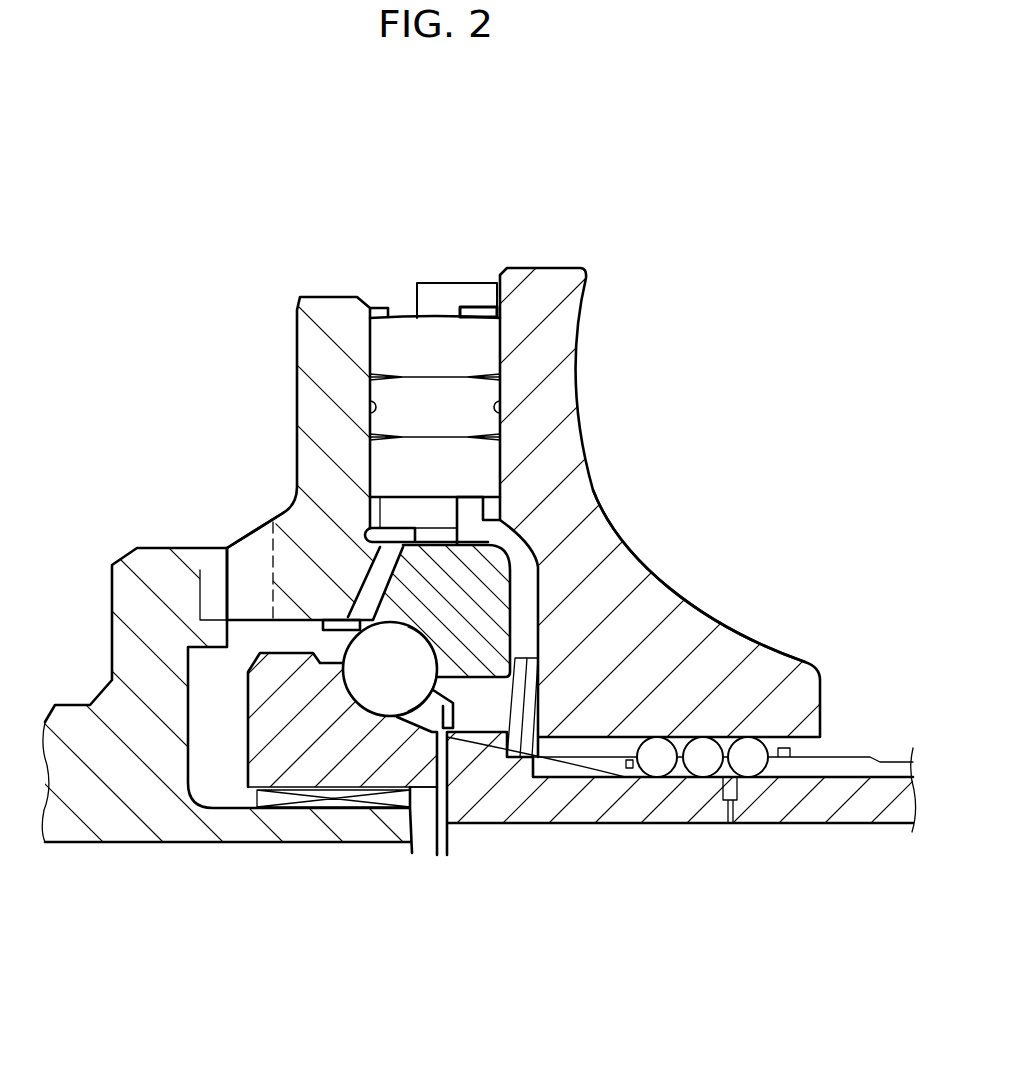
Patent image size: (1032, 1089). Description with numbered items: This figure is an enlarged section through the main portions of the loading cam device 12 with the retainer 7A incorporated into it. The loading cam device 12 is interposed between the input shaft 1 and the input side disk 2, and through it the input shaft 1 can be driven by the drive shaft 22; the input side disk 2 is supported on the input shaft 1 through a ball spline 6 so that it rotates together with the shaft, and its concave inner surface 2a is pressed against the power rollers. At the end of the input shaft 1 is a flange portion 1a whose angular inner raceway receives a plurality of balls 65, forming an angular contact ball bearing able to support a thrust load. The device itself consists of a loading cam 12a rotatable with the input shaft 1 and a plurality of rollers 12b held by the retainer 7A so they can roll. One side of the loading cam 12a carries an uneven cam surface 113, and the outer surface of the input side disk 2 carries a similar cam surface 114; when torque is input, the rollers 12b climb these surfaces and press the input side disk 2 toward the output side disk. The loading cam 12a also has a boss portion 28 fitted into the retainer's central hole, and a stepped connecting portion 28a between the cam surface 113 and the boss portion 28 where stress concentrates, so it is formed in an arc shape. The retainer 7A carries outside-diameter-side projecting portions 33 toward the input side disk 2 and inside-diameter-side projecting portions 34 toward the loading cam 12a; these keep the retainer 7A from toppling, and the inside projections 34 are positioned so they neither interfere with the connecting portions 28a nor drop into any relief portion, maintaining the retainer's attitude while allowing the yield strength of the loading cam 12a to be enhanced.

The input shaft 1 is at (590, 810).
The flange portion 1a is at (260, 722).
The input side disk 2 is at (516, 544).
The inner surface of input side disk 2a is at (638, 556).
The ball spline 6 is at (748, 770).
The retainer 7A is at (435, 297).
The loading cam device 12 is at (516, 544).
The loading cam 12a is at (308, 390).
The rollers 12b is at (435, 406).
The drive shaft 22 is at (137, 833).
The boss portion 28 is at (584, 491).
The connecting portion 28a is at (300, 518).
The outside-diameter-side projecting portions 33 is at (479, 290).
The inside-diameter-side projecting portions 34 is at (385, 512).
The balls 65 is at (385, 697).
The cam surface 113 is at (376, 411).
The cam surface 114 is at (496, 410).